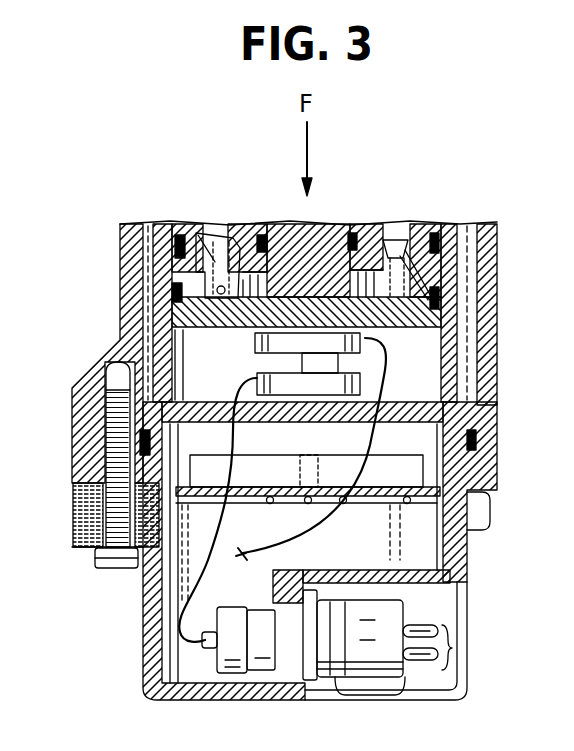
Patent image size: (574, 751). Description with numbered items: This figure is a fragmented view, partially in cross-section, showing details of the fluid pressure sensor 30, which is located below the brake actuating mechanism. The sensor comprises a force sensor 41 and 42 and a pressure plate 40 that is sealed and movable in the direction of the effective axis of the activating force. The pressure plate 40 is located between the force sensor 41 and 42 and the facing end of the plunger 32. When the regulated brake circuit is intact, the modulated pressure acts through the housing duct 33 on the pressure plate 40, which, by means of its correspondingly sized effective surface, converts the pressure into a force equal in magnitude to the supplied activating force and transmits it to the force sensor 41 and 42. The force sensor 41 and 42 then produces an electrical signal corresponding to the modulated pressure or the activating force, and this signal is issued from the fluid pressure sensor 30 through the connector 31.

The fluid pressure sensor 30 is at (104, 310).
The connector 31 is at (452, 648).
The plunger 32 is at (285, 222).
The housing duct 33 is at (213, 228).
The pressure plate 40 is at (414, 308).
The force sensor 41 is at (258, 345).
The force sensor 42 is at (255, 375).